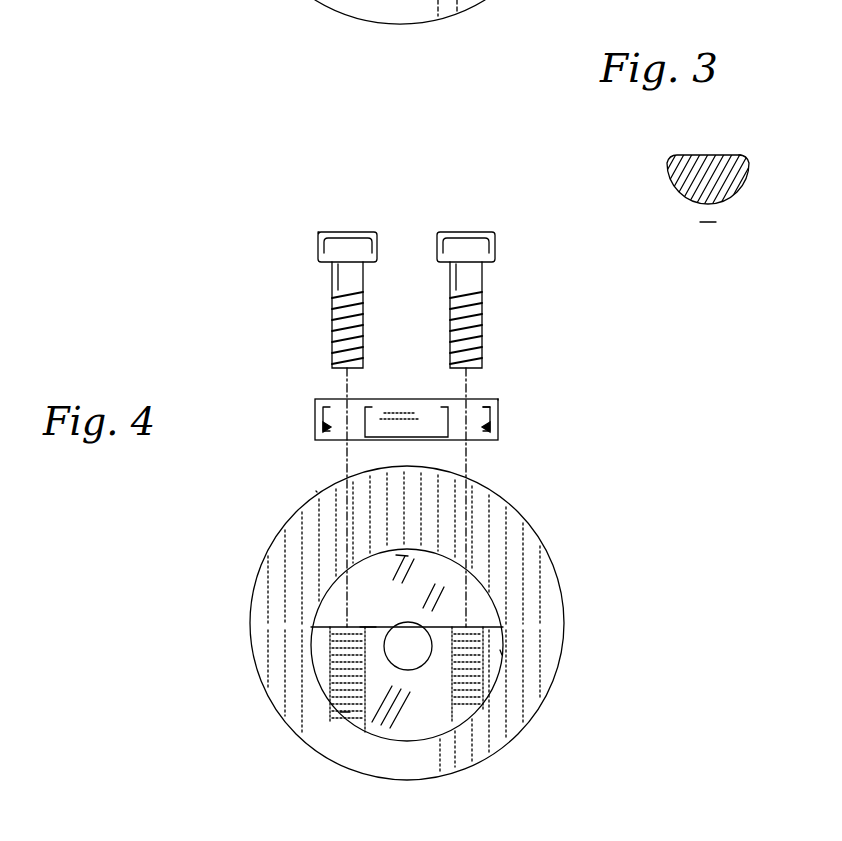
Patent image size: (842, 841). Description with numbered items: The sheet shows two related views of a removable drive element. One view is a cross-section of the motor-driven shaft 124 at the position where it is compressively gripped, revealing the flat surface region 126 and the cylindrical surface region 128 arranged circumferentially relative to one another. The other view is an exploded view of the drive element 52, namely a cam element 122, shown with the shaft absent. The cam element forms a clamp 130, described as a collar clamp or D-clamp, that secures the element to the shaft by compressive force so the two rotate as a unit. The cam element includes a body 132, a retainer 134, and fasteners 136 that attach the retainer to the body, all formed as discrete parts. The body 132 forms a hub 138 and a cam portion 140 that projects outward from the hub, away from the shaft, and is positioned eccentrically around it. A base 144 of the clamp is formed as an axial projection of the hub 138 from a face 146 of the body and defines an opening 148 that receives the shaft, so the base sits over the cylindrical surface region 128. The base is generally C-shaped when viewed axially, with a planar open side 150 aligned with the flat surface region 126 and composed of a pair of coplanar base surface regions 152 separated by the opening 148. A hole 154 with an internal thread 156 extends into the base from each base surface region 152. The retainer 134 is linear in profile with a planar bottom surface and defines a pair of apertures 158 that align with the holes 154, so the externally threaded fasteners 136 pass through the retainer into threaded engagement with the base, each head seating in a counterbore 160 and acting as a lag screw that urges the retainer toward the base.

In FIG. 4, the hub assembly 52 is at (268, 248).
In FIG. 4, the cam element 122 is at (268, 283).
In FIG. 3, the motor-driven shaft 124 is at (701, 146).
In FIG. 3, the flat surface region 126 is at (722, 153).
In FIG. 3, the cylindrical surface region 128 is at (714, 221).
In FIG. 4, the clamp 130 is at (530, 355).
In FIG. 4, the body 132 is at (316, 490).
In FIG. 4, the retainer 134 is at (383, 399).
In FIG. 4, the fasteners 136 is at (345, 232).
In FIG. 4, the hub 138 is at (487, 591).
In FIG. 4, the cam portion 140 is at (547, 551).
In FIG. 4, the base 144 is at (503, 656).
In FIG. 4, the face 146 is at (430, 528).
In FIG. 4, the opening 148 is at (426, 665).
In FIG. 4, the open side 150 is at (368, 626).
In FIG. 4, the base surface regions 152 is at (312, 627).
In FIG. 4, the holes 154 is at (342, 677).
In FIG. 4, the internal thread 156 is at (345, 702).
In FIG. 4, the apertures 158 is at (323, 427).
In FIG. 4, the counterbore 160 is at (488, 406).